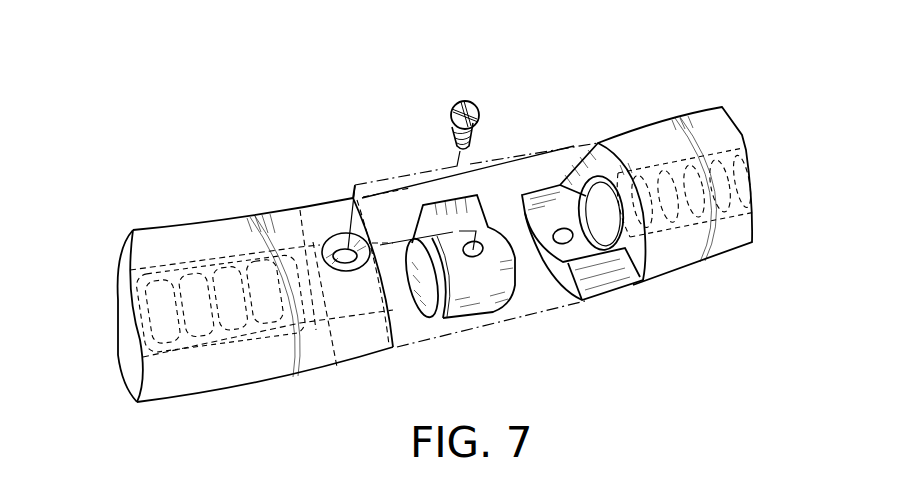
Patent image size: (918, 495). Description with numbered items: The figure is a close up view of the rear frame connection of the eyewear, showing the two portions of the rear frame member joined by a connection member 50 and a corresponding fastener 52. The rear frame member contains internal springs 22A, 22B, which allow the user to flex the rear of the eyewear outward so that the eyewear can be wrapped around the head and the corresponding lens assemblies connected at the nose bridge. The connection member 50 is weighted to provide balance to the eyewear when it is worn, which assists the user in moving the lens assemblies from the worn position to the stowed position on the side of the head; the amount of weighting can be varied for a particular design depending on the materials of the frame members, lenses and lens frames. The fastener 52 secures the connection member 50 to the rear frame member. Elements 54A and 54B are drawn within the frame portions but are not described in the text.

The internal spring 22A is at (205, 232).
The internal spring 22B is at (703, 122).
The connection member 50 is at (488, 285).
The fastener 52 is at (453, 103).
The first cassette 54A is at (193, 357).
The second cassette 54B is at (683, 232).